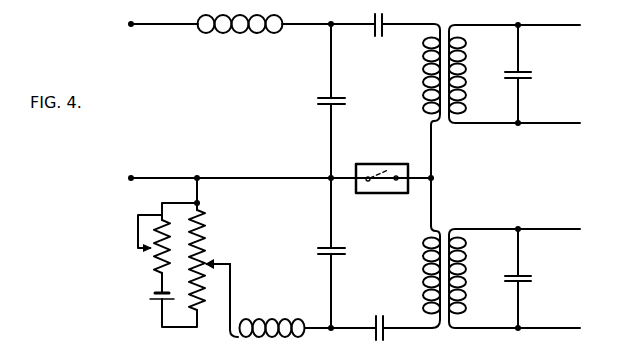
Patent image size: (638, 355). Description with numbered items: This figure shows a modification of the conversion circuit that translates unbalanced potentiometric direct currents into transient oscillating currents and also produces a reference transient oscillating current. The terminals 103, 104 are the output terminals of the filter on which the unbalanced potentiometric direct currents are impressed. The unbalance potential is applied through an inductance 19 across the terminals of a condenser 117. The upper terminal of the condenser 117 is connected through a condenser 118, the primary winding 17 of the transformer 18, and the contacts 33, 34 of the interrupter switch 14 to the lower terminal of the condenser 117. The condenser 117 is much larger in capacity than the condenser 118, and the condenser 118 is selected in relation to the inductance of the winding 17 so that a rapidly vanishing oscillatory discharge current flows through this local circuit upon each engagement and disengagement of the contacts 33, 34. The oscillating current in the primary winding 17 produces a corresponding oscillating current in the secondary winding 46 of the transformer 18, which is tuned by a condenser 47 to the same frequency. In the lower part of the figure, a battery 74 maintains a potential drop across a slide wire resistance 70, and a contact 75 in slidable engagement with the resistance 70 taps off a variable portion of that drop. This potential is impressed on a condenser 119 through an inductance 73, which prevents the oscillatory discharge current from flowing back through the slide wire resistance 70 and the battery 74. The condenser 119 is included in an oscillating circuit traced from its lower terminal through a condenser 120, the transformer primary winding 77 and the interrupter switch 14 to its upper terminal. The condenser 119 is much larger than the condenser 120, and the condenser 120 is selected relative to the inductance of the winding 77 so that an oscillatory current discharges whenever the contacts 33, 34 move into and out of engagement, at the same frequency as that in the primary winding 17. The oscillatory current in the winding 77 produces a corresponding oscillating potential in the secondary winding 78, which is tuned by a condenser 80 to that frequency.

The terminal 103 is at (131, 26).
The terminal 104 is at (132, 177).
The inductance 19 is at (240, 33).
The condenser 117 is at (318, 102).
The condenser 118 is at (380, 36).
The transformer 18 is at (446, 25).
The primary winding 17 is at (428, 82).
The secondary winding 46 is at (463, 68).
The condenser 47 is at (531, 74).
The interrupter switch 14 is at (369, 163).
The contact 34 is at (385, 169).
The contact 33 is at (397, 184).
The slide wire resistance 70 is at (207, 233).
The contact 75 is at (210, 262).
The battery 74 is at (156, 293).
The condenser 119 is at (318, 250).
The inductance 73 is at (272, 319).
The condenser 120 is at (378, 314).
The primary winding 77 is at (427, 274).
The secondary winding 78 is at (463, 273).
The condenser 80 is at (531, 277).